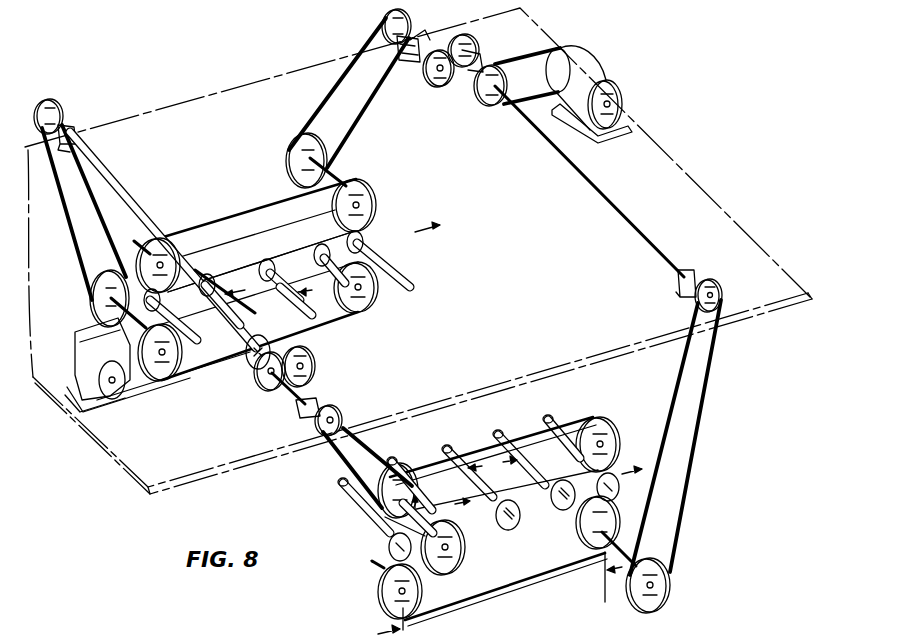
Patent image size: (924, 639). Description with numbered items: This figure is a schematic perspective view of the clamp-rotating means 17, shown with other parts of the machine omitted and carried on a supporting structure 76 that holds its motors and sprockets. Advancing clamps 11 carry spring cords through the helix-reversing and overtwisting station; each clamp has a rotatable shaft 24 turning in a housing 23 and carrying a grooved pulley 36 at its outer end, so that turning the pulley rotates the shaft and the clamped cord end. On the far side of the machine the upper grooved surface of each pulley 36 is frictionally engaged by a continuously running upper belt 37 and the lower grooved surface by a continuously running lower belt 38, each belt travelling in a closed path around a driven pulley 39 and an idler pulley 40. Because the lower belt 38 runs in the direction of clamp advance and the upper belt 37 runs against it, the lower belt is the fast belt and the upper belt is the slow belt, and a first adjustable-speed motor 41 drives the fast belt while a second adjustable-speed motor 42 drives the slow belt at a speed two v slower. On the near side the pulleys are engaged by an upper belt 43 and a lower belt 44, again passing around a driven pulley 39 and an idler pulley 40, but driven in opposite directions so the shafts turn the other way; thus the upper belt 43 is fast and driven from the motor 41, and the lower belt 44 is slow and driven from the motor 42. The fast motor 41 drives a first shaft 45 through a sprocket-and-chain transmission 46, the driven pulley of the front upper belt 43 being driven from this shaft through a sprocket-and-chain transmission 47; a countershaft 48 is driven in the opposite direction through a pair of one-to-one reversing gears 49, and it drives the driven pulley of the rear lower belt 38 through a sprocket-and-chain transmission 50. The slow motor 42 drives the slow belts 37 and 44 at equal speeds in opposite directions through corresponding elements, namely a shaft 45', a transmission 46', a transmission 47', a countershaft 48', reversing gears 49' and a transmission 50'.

The clamp 11 is at (371, 359).
The clamp-rotating means 17 is at (256, 191).
The housing 23 is at (342, 272).
The rotatable shaft 24 is at (270, 306).
The grooved pulley 36 is at (268, 262).
The upper belt 37 is at (226, 220).
The lower belt 38 is at (340, 323).
The driven pulley 39 is at (372, 196).
The idler pulley 40 is at (158, 250).
The first adjustable-speed motor 41 is at (85, 336).
The second adjustable-speed motor 42 is at (594, 62).
The upper belt 43 is at (529, 439).
The lower belt 44 is at (504, 517).
The first shaft 45 is at (170, 264).
The shaft 45' is at (589, 181).
The sprocket-and-chain transmission 46 is at (212, 341).
The sprocket-and-chain transmission 46' is at (522, 68).
The sprocket-and-chain transmission 47 is at (353, 468).
The sprocket-and-chain transmission 47' is at (678, 441).
The countershaft 48 is at (260, 261).
The countershaft 48' is at (422, 33).
The reversing gear 49 is at (288, 391).
The reversing gear 49' is at (462, 67).
The sprocket-and-chain transmission 50 is at (80, 199).
The sprocket-and-chain transmission 50' is at (348, 98).
The supporting structure 76 is at (122, 474).